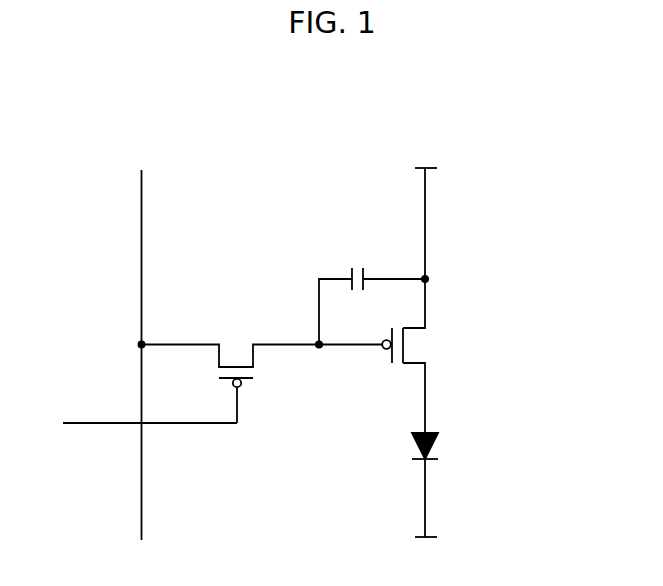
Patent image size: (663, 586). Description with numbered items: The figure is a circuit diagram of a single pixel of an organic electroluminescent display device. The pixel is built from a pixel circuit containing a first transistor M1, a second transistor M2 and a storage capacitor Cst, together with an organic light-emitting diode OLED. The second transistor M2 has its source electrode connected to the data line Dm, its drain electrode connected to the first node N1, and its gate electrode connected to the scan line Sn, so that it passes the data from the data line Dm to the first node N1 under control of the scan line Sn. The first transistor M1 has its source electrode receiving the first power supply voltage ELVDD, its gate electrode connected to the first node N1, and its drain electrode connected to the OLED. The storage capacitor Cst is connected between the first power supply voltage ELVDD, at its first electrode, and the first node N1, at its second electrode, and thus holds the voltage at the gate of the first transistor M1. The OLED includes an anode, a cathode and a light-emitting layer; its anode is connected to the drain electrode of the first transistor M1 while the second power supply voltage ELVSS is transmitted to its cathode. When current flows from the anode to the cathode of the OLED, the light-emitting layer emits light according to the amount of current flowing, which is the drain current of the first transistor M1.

The data line Dm is at (141, 339).
The scan line Sn is at (134, 423).
The second transistor M2 is at (231, 367).
The first node N1 is at (317, 361).
The storage capacitor Cst is at (374, 293).
The first transistor M1 is at (394, 356).
The first power supply voltage ELVDD is at (424, 210).
The organic light-emitting diode OLED is at (460, 485).
The second power supply voltage ELVSS is at (425, 555).